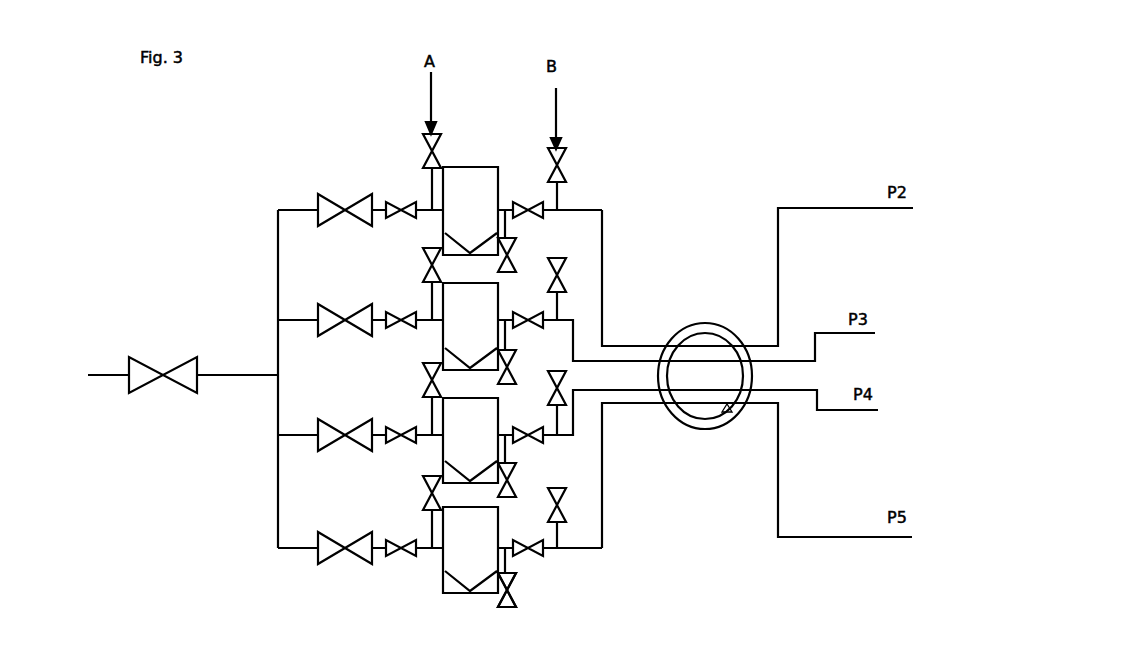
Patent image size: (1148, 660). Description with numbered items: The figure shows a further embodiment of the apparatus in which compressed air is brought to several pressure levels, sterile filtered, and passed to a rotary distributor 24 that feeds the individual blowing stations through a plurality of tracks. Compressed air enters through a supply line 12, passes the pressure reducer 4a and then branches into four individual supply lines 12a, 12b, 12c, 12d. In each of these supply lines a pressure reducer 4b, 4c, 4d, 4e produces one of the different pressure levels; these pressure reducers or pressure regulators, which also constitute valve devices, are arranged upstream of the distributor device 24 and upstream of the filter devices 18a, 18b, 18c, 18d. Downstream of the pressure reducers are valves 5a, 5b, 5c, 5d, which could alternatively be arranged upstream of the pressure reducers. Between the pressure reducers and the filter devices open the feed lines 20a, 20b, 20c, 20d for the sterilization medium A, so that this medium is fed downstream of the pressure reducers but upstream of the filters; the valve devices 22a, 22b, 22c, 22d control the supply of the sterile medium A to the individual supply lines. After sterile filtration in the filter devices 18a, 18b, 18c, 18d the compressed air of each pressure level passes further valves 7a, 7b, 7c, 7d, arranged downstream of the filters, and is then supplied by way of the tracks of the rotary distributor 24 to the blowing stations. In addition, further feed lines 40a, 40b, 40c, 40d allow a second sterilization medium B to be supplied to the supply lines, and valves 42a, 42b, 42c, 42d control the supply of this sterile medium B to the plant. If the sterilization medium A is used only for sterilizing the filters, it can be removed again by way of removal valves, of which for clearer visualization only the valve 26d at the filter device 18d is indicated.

The supply line 12 is at (96, 375).
The supply line 12a is at (302, 208).
The supply line 12b is at (302, 318).
The supply line 12c is at (293, 402).
The supply line 12d is at (303, 552).
The pressure reducer 4a is at (185, 373).
The pressure reducer 4b is at (350, 205).
The pressure reducer 4c is at (338, 308).
The pressure reducer 4d is at (343, 425).
The pressure reducer 4e is at (327, 550).
The valve 5a is at (408, 205).
The valve 5b is at (410, 317).
The valve 5c is at (408, 432).
The valve 5d is at (418, 556).
The valve device 22a is at (424, 145).
The valve device 22b is at (424, 258).
The valve device 22c is at (424, 370).
The valve device 22d is at (423, 477).
The feed line 20a is at (435, 192).
The feed line 20b is at (442, 293).
The feed line 20c is at (442, 417).
The feed line 20d is at (442, 522).
The valve 26d is at (514, 606).
The filter device 18a is at (470, 211).
The filter device 18b is at (470, 326).
The filter device 18c is at (470, 440).
The filter device 18d is at (470, 550).
The valve 7a is at (528, 205).
The valve 7b is at (528, 315).
The valve 7c is at (525, 432).
The valve 7d is at (525, 544).
The valve 42a is at (566, 170).
The valve 42b is at (567, 272).
The valve 42c is at (568, 390).
The valve 42d is at (565, 493).
The feed line 40a is at (557, 195).
The feed line 40b is at (558, 304).
The feed line 40c is at (562, 415).
The feed line 40d is at (558, 533).
The rotary distributor 24 is at (733, 333).